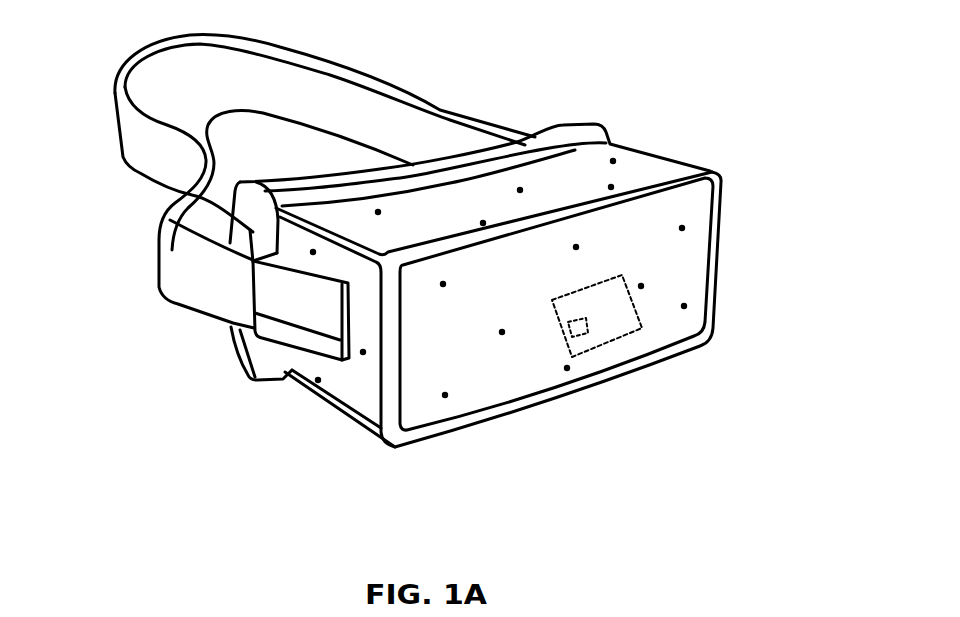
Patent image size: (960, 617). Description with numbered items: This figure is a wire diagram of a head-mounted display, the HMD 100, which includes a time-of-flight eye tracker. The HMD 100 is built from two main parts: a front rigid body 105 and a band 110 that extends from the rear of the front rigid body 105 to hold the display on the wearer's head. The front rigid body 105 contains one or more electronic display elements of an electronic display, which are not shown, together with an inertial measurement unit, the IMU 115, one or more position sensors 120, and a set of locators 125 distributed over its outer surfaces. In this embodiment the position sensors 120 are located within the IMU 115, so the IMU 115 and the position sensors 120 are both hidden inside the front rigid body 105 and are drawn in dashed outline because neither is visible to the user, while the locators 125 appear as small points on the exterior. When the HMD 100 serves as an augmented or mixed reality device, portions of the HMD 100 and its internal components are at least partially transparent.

The HMD 100 is at (52, 40).
The front rigid body 105 is at (716, 175).
The band 110 is at (422, 97).
The inertial measurement unit 115 is at (642, 328).
The position sensors 120 is at (577, 328).
The locators 125 is at (685, 305).